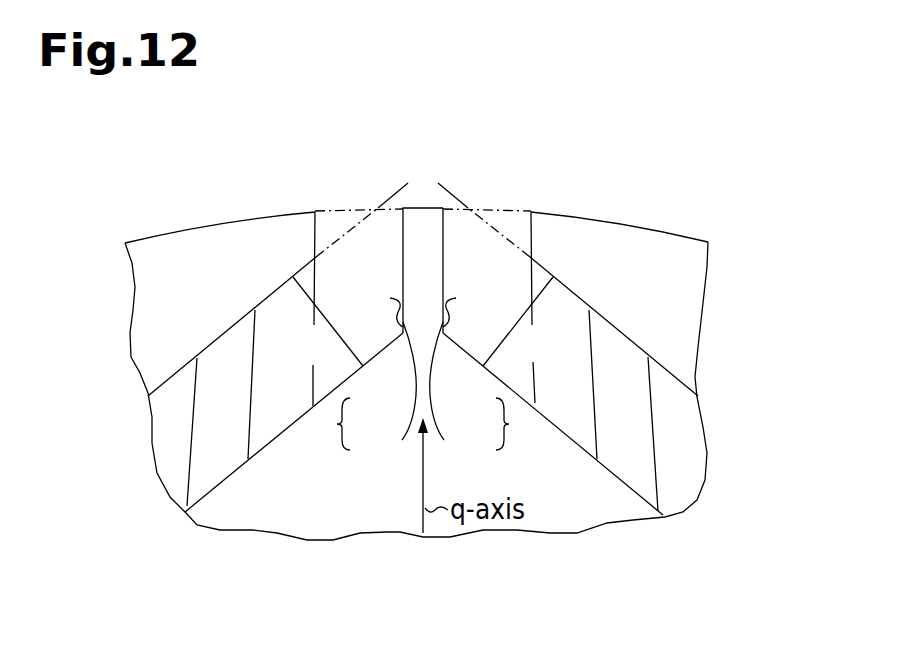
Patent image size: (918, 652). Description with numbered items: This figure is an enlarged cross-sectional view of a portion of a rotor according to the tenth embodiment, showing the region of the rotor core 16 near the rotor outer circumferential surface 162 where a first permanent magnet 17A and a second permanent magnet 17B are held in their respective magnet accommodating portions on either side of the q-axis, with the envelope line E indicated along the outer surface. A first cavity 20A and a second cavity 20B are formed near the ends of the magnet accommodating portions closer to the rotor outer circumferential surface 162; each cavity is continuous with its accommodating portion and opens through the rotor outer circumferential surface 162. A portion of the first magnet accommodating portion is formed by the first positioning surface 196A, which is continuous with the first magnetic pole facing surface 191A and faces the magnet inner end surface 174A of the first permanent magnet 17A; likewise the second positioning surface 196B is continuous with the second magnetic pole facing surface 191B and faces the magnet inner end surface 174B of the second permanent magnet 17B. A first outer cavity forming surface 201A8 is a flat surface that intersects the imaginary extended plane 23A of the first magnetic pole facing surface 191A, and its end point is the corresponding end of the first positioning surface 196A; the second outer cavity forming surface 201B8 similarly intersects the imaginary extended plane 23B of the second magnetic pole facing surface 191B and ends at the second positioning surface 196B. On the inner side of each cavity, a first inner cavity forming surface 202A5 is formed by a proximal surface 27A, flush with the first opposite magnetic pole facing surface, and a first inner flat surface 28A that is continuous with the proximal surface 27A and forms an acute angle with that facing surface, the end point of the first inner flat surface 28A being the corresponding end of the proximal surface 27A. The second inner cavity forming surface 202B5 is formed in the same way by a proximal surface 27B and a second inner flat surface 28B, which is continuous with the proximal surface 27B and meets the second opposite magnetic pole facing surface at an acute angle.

The rotor core 16 is at (693, 265).
The rotor outer circumferential surface 162 is at (669, 231).
The envelope line E is at (358, 212).
The imaginary extended plane 23B is at (368, 222).
The imaginary extended plane 23A is at (478, 222).
The second outer cavity forming surface 201B8 is at (316, 232).
The first outer cavity forming surface 201A8 is at (530, 232).
The magnet inner end surface 174B is at (258, 290).
The magnet inner end surface 174A is at (588, 290).
The second positioning surface 196B is at (276, 320).
The first positioning surface 196A is at (569, 320).
The second magnetic pole facing surface 191B is at (172, 375).
The first magnetic pole facing surface 191A is at (674, 375).
The second cavity 20B is at (348, 322).
The first cavity 20A is at (498, 322).
The proximal surface 27B is at (386, 342).
The proximal surface 27A is at (460, 342).
The second inner flat surface 28B is at (399, 331).
The first inner flat surface 28A is at (468, 331).
The second inner cavity forming surface 202B5 is at (337, 424).
The first inner cavity forming surface 202A5 is at (509, 424).
The second permanent magnet 17B is at (165, 457).
The first permanent magnet 17A is at (690, 466).